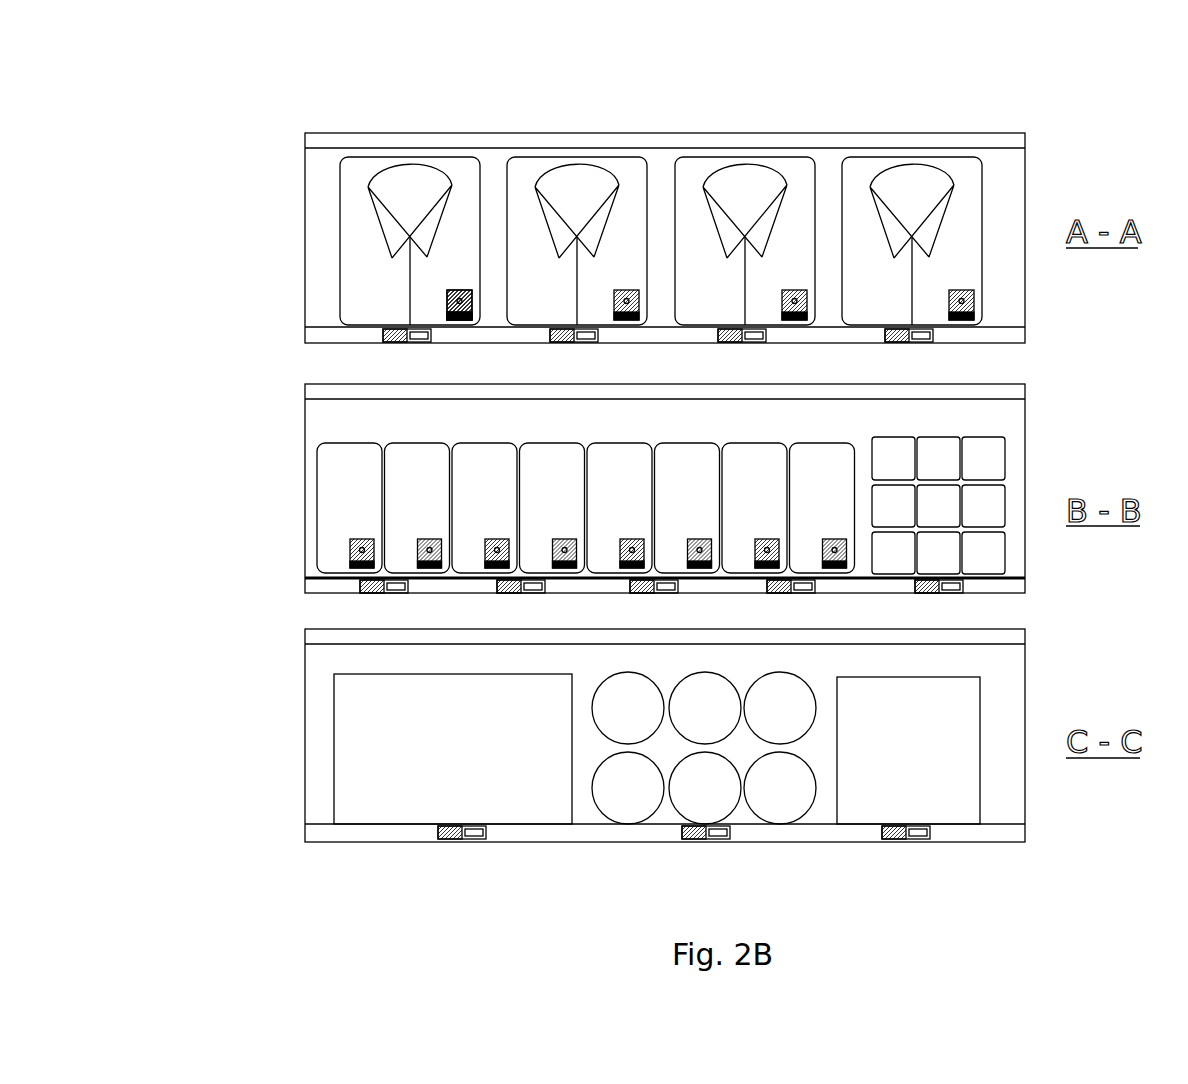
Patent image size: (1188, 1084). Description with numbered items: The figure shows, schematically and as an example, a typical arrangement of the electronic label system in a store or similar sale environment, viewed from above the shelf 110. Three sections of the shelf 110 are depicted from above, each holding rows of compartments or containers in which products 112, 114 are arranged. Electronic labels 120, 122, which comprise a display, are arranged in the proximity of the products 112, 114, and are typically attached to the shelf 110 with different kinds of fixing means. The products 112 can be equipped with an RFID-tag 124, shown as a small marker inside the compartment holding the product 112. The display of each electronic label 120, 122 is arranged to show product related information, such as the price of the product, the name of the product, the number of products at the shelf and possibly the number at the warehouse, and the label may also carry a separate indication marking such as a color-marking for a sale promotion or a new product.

The shelf 110 is at (1008, 159).
The product 112 is at (358, 183).
The product 114 is at (358, 783).
The electronic label 120 is at (403, 335).
The electronic label 122 is at (460, 833).
The RFID-tag 124 is at (459, 300).